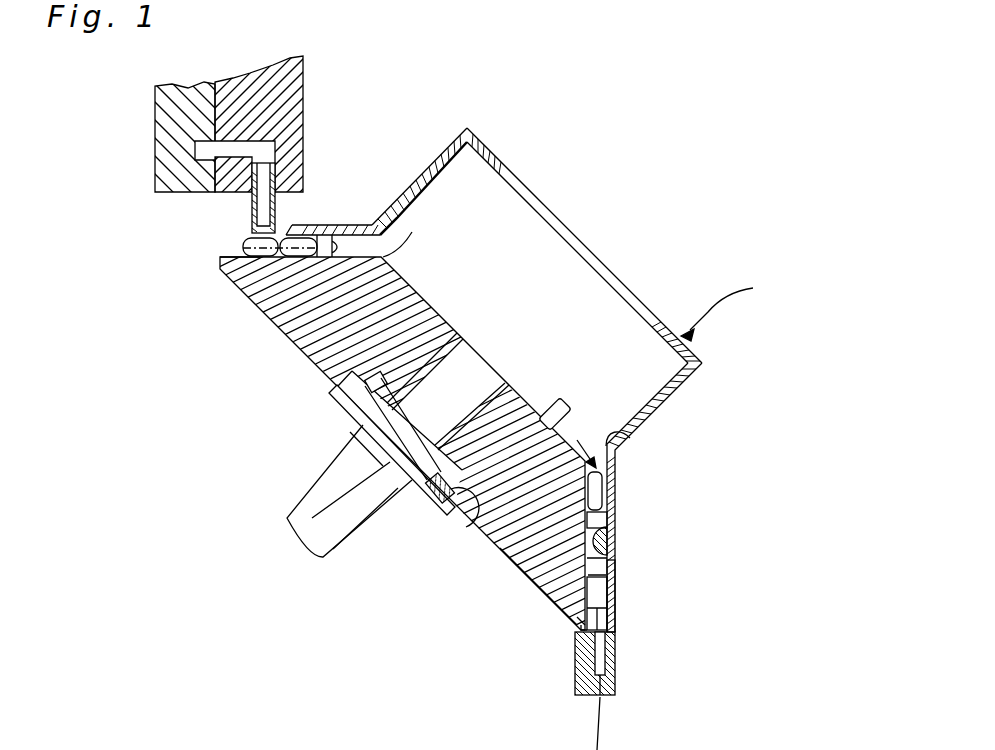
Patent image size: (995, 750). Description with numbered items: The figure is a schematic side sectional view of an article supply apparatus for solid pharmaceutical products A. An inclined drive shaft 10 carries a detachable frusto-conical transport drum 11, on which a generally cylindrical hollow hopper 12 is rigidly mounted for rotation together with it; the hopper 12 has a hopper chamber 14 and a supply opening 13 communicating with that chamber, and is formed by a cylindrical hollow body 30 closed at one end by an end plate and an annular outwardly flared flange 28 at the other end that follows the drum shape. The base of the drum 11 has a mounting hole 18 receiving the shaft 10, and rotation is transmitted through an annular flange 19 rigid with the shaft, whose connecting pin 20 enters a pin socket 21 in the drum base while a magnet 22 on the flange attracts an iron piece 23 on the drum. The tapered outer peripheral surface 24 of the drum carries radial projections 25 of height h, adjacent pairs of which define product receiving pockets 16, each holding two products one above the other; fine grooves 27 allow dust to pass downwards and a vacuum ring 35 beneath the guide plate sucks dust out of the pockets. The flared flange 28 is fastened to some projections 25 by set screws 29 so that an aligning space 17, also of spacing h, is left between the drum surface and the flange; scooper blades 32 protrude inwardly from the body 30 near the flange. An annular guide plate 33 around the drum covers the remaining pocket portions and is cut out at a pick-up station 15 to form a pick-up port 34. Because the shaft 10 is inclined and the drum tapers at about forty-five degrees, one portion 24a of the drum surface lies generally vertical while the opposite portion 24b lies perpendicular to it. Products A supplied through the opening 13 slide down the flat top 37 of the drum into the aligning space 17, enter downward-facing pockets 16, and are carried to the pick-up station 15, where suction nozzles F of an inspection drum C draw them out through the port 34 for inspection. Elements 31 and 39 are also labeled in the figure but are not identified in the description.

The inspection drum C is at (265, 95).
The suction nozzles F is at (253, 215).
The drive shaft 10 is at (306, 520).
The transport drum 11 is at (315, 330).
The hopper 12 is at (663, 408).
The supply opening 13 is at (563, 240).
The hopper chamber 14 is at (557, 302).
The pick-up station 15 is at (287, 237).
The product receiving pockets 16 is at (563, 630).
The aligning space 17 is at (598, 518).
The mounting hole 18 is at (443, 360).
The annular flange 19 is at (350, 470).
The connecting pin 20 is at (345, 405).
The pin socket 21 is at (380, 377).
The magnet 22 is at (438, 503).
The iron piece 23 is at (478, 510).
The outer peripheral surface 24 is at (277, 274).
The portion of outer peripheral surface 24a is at (547, 560).
The opposite portion of outer peripheral surface 24b is at (330, 345).
The radial projections 25 is at (610, 568).
The fine groove 27 is at (615, 620).
The flared flange 28 is at (352, 224).
The set screws 29 is at (612, 538).
The cylindrical hollow body 30 is at (688, 381).
The seal 31 is at (360, 255).
The scooper blades 32 is at (627, 438).
The annular guide plate 33 is at (608, 606).
The pick-up port 34 is at (233, 240).
The vacuum ring 35 is at (617, 695).
The flat top 37 is at (552, 413).
The air flow direction 39 is at (737, 306).
The solid pharmaceutical products A is at (553, 420).
The height h is at (290, 286).